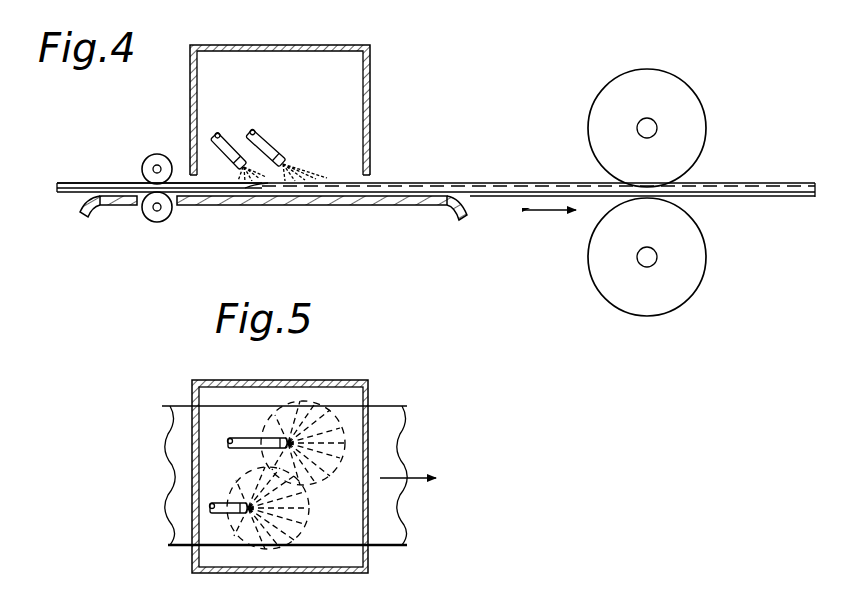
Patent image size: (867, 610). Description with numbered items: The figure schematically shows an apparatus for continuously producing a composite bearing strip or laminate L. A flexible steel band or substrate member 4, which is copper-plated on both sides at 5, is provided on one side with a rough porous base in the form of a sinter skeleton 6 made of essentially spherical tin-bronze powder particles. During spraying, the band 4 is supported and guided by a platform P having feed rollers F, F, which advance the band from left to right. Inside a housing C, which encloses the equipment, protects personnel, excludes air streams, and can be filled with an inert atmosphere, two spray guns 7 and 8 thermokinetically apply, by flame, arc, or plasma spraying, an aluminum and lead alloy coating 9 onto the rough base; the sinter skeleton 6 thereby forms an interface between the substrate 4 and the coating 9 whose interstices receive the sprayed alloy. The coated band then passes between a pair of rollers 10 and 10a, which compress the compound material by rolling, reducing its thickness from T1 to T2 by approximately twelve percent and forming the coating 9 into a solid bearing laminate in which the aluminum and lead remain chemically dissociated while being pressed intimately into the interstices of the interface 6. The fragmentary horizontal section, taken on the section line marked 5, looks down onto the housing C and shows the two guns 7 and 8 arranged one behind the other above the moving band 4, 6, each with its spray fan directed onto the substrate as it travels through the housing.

In FIG. 4, the substrate member 4 is at (67, 193).
In FIG. 5, the substrate member 4 is at (177, 485).
In FIG. 4, the sinter skeleton 6 is at (103, 182).
In FIG. 4, the copper plating 5 is at (177, 99).
In FIG. 4, the spray gun 7 is at (217, 134).
In FIG. 5, the spray gun 7 is at (223, 503).
In FIG. 4, the spray gun 8 is at (257, 133).
In FIG. 5, the spray gun 8 is at (243, 438).
In FIG. 4, the alloy coating 9 is at (387, 180).
In FIG. 4, the roller 10 is at (672, 90).
In FIG. 4, the roller 10a is at (666, 298).
In FIG. 4, the housing C is at (343, 45).
In FIG. 5, the housing C is at (350, 380).
In FIG. 4, the platform P is at (330, 206).
In FIG. 4, the feed rollers F is at (151, 156).
In FIG. 4, the composite bearing strip or laminate L is at (515, 180).
In FIG. 4, the thickness before rolling T1 is at (490, 142).
In FIG. 4, the thickness after rolling T2 is at (753, 146).